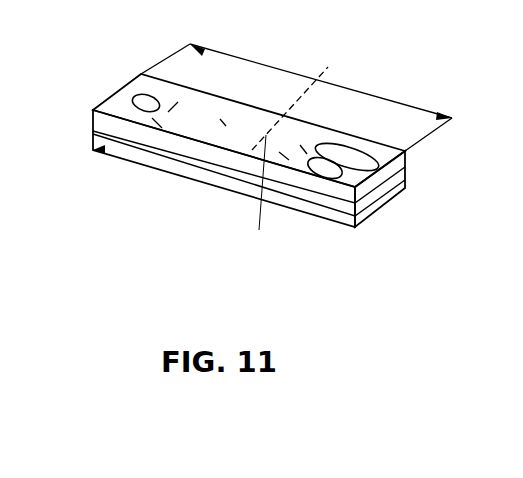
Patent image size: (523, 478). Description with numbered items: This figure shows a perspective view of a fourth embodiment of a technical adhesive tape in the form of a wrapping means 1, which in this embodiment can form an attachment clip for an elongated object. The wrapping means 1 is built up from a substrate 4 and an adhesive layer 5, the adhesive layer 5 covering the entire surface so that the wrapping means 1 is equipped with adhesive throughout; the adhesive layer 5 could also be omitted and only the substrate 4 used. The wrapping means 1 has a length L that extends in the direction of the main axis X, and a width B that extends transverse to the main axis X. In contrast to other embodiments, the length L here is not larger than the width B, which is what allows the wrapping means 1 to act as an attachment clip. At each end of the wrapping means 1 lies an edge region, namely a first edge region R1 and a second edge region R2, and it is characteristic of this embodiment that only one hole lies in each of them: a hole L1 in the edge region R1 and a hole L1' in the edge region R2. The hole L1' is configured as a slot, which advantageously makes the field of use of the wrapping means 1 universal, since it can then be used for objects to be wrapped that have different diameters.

The wrapping means 1 is at (215, 207).
The substrate 4 is at (92, 152).
The adhesive layer 5 is at (228, 116).
The hole L1 is at (109, 85).
The hole L1' is at (375, 180).
The edge region R1 is at (144, 87).
The edge region R2 is at (329, 176).
The length L is at (263, 195).
The main axis X is at (325, 64).
The width B is at (367, 92).